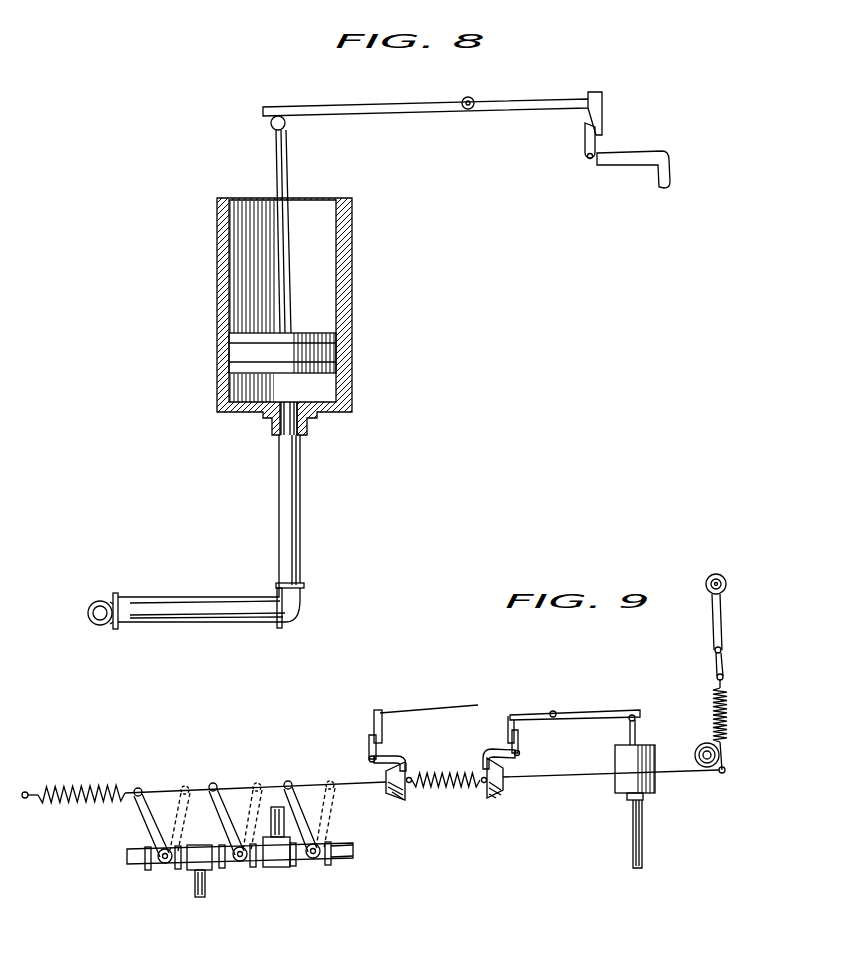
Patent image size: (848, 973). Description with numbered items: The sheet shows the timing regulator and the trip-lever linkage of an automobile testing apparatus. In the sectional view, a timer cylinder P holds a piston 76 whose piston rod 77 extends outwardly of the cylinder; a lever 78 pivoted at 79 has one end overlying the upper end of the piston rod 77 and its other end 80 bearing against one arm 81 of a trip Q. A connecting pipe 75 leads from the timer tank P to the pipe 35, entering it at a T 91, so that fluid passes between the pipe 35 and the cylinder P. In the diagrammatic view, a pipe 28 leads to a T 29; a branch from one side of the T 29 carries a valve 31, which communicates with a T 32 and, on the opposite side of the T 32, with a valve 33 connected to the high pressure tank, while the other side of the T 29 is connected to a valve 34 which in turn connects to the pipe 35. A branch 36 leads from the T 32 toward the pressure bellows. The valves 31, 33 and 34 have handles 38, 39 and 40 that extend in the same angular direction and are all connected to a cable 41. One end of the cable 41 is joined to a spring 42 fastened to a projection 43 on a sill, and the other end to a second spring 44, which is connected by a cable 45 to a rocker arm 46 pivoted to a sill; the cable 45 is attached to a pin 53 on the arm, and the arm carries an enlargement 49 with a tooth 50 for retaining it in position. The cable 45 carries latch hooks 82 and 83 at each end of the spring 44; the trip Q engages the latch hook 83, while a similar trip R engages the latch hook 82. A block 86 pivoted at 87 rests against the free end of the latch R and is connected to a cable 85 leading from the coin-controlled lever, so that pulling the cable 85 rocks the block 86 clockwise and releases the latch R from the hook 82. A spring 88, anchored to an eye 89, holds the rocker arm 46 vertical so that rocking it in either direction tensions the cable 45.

In FIG. 8, the lever 78 is at (376, 103).
In FIG. 9, the lever 78 is at (601, 713).
In FIG. 8, the pivot 79 is at (473, 100).
In FIG. 9, the pivot 79 is at (556, 711).
In FIG. 8, the other end of lever 80 is at (596, 116).
In FIG. 9, the other end of lever 80 is at (509, 731).
In FIG. 8, the arm of trip 81 is at (585, 137).
In FIG. 8, the trip Q is at (630, 164).
In FIG. 9, the trip Q is at (520, 751).
In FIG. 8, the piston rod 77 is at (287, 191).
In FIG. 9, the piston rod 77 is at (632, 730).
In FIG. 8, the timer cylinder P is at (354, 268).
In FIG. 9, the timer cylinder P is at (645, 746).
In FIG. 8, the piston 76 is at (338, 349).
In FIG. 8, the connecting pipe 75 is at (286, 466).
In FIG. 9, the connecting pipe 75 is at (632, 851).
In FIG. 8, the pipe 35 is at (88, 612).
In FIG. 9, the pipe 35 is at (340, 847).
In FIG. 8, the T 91 is at (100, 627).
In FIG. 9, the rocker arm 46 is at (718, 611).
In FIG. 9, the enlargement 49 is at (722, 648).
In FIG. 9, the pin 53 is at (723, 672).
In FIG. 9, the spring 88 is at (723, 719).
In FIG. 9, the tooth 50 is at (711, 768).
In FIG. 9, the eye 89 is at (726, 770).
In FIG. 9, the cable 45 is at (603, 776).
In FIG. 9, the latch hook 83 is at (500, 794).
In FIG. 9, the latch hook 82 is at (393, 798).
In FIG. 9, the second spring 44 is at (429, 775).
In FIG. 9, the trip R is at (370, 745).
In FIG. 9, the pivot 87 is at (378, 731).
In FIG. 9, the block 86 is at (374, 722).
In FIG. 9, the cable 85 is at (463, 698).
In FIG. 9, the projection 43 is at (25, 791).
In FIG. 9, the spring 42 is at (96, 801).
In FIG. 9, the cable 41 is at (163, 789).
In FIG. 9, the handle 39 is at (151, 817).
In FIG. 9, the handle 38 is at (222, 812).
In FIG. 9, the handle 40 is at (294, 800).
In FIG. 9, the valve 33 is at (165, 866).
In FIG. 9, the valve 31 is at (240, 866).
In FIG. 9, the valve 34 is at (316, 866).
In FIG. 9, the T 32 is at (200, 845).
In FIG. 9, the branch 36 is at (203, 898).
In FIG. 9, the T 29 is at (276, 867).
In FIG. 9, the pipe 28 is at (278, 807).